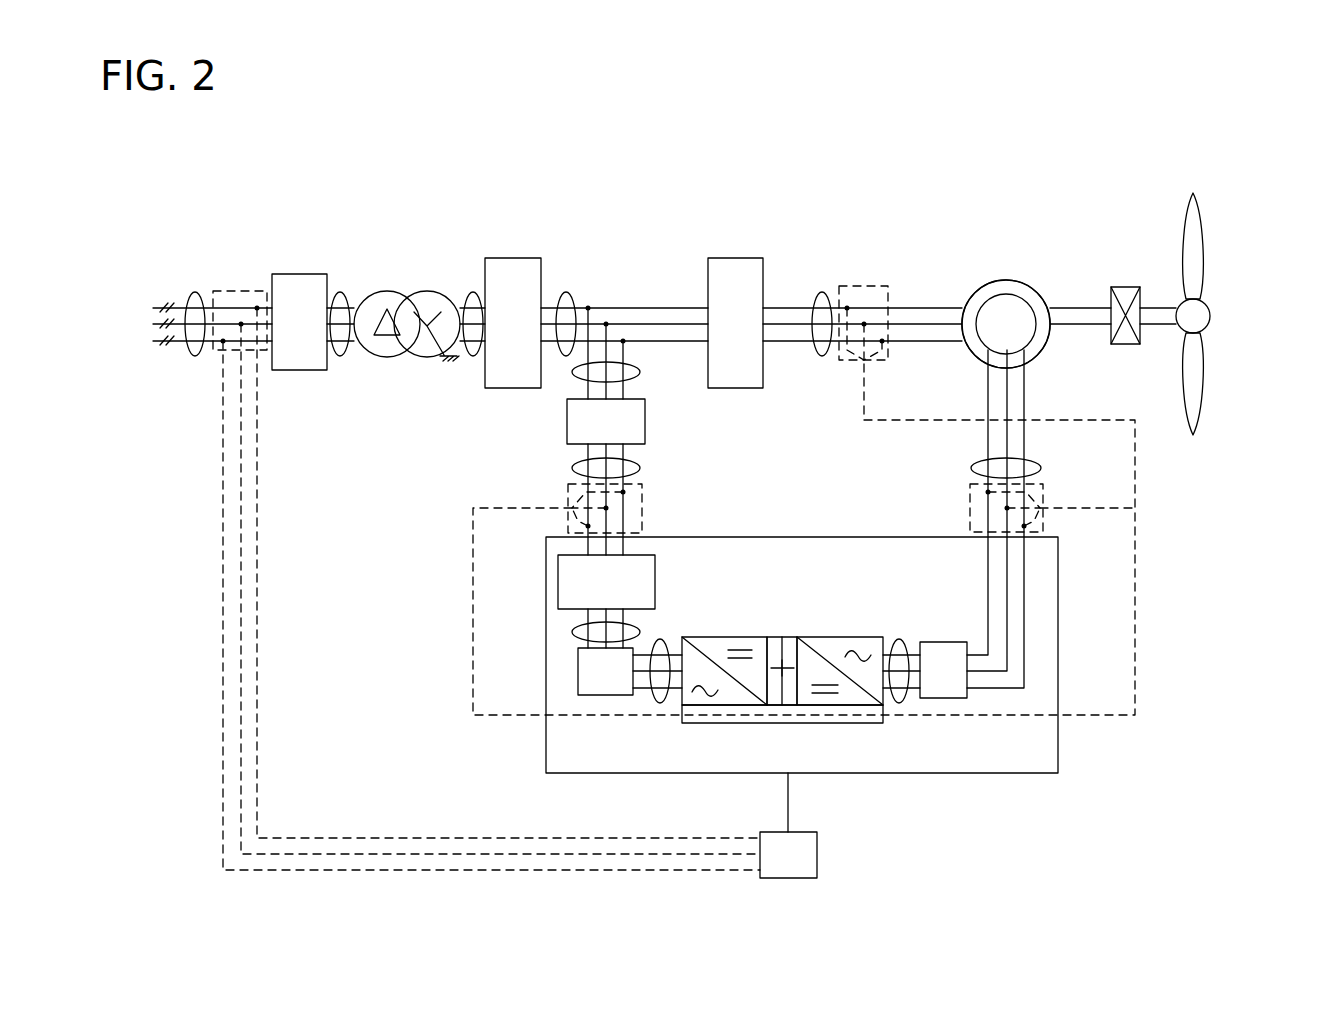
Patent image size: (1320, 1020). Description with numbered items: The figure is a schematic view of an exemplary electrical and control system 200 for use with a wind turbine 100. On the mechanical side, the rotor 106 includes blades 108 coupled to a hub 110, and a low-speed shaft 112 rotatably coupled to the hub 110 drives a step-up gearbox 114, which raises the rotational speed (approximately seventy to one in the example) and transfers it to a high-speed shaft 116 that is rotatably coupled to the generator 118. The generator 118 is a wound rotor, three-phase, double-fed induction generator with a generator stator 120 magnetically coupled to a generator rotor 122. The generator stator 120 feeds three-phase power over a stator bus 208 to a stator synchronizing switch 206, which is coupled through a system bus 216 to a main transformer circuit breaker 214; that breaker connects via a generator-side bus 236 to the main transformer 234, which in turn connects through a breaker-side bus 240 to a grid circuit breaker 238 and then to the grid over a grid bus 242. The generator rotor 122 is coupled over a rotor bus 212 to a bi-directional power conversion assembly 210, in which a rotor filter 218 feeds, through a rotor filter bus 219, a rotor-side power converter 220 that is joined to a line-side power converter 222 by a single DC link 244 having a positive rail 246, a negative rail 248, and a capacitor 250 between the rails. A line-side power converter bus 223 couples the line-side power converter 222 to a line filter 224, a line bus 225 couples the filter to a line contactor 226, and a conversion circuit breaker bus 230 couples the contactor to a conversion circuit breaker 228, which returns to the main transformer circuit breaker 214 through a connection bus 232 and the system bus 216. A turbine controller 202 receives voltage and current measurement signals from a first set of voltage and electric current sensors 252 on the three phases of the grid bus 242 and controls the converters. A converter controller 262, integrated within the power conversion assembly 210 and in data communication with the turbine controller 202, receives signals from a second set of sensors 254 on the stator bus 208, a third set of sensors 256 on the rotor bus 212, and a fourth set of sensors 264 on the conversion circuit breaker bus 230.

The wind turbine 100 is at (1180, 176).
The rotor 106 is at (1220, 294).
The blades 108 is at (1204, 250).
The hub 110 is at (1212, 316).
The low-speed shaft 112 is at (1155, 308).
The step-up gearbox 114 is at (1122, 287).
The high-speed shaft 116 is at (1080, 308).
The generator 118 is at (1008, 243).
The generator stator 120 is at (1012, 283).
The generator rotor 122 is at (1000, 303).
The electrical and control system 200 is at (248, 160).
The turbine controller 202 is at (773, 869).
The stator synchronizing switch 206 is at (738, 258).
The stator bus 208 is at (821, 292).
The power conversion assembly 210 is at (1060, 651).
The rotor bus 212 is at (1041, 468).
The main transformer circuit breaker 214 is at (513, 258).
The system bus 216 is at (566, 292).
The rotor filter 218 is at (940, 655).
The rotor filter bus 219 is at (905, 640).
The rotor-side power converter 220 is at (897, 707).
The line-side power converter 222 is at (685, 712).
The line-side power converter bus 223 is at (664, 640).
The line filter 224 is at (578, 671).
The line bus 225 is at (572, 632).
The line contactor 226 is at (558, 580).
The conversion circuit breaker 228 is at (646, 420).
The conversion circuit breaker bus 230 is at (641, 468).
The connection bus 232 is at (641, 372).
The main transformer 234 is at (420, 291).
The generator-side bus 236 is at (471, 291).
The grid circuit breaker 238 is at (298, 274).
The breaker-side bus 240 is at (340, 292).
The grid bus 242 is at (196, 292).
The DC link 244 is at (763, 597).
The positive rail 246 is at (790, 637).
The negative rail 248 is at (792, 723).
The capacitor 250 is at (773, 664).
The first set of voltage and electric current sensors 252 is at (212, 362).
The second set of voltage and electric current sensors 254 is at (879, 282).
The third set of voltage and electric current sensors 256 is at (955, 505).
The converter controller 262 is at (840, 725).
The fourth set of voltage and electric current sensors 264 is at (646, 508).